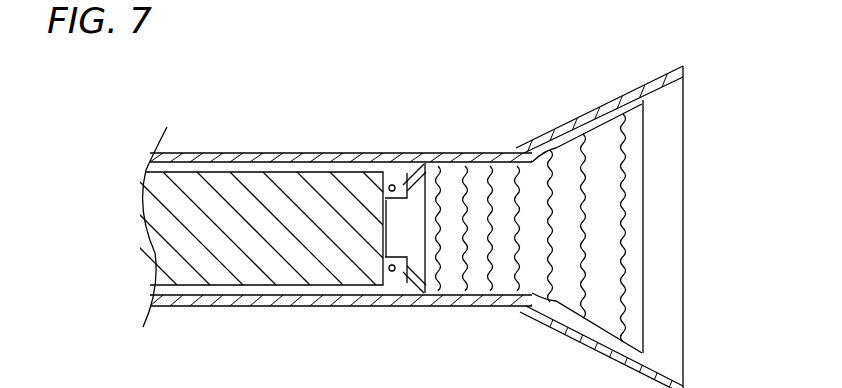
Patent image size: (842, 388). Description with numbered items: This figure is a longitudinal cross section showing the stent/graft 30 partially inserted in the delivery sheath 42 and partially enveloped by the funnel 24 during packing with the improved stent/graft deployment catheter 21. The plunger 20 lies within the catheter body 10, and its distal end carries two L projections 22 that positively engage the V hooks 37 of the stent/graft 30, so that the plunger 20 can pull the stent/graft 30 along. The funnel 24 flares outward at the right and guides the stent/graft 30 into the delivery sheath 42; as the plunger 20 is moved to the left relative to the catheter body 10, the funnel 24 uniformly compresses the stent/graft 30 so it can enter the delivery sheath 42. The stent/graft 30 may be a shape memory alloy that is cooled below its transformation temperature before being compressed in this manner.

The catheter body 10 is at (278, 153).
The plunger 20 is at (358, 170).
The stent/graft deployment catheter 21 is at (207, 128).
The L projections 22 is at (382, 165).
The V hooks 37 is at (400, 187).
The delivery sheath 42 is at (482, 153).
The funnel 24 is at (640, 80).
The stent/graft 30 is at (643, 152).